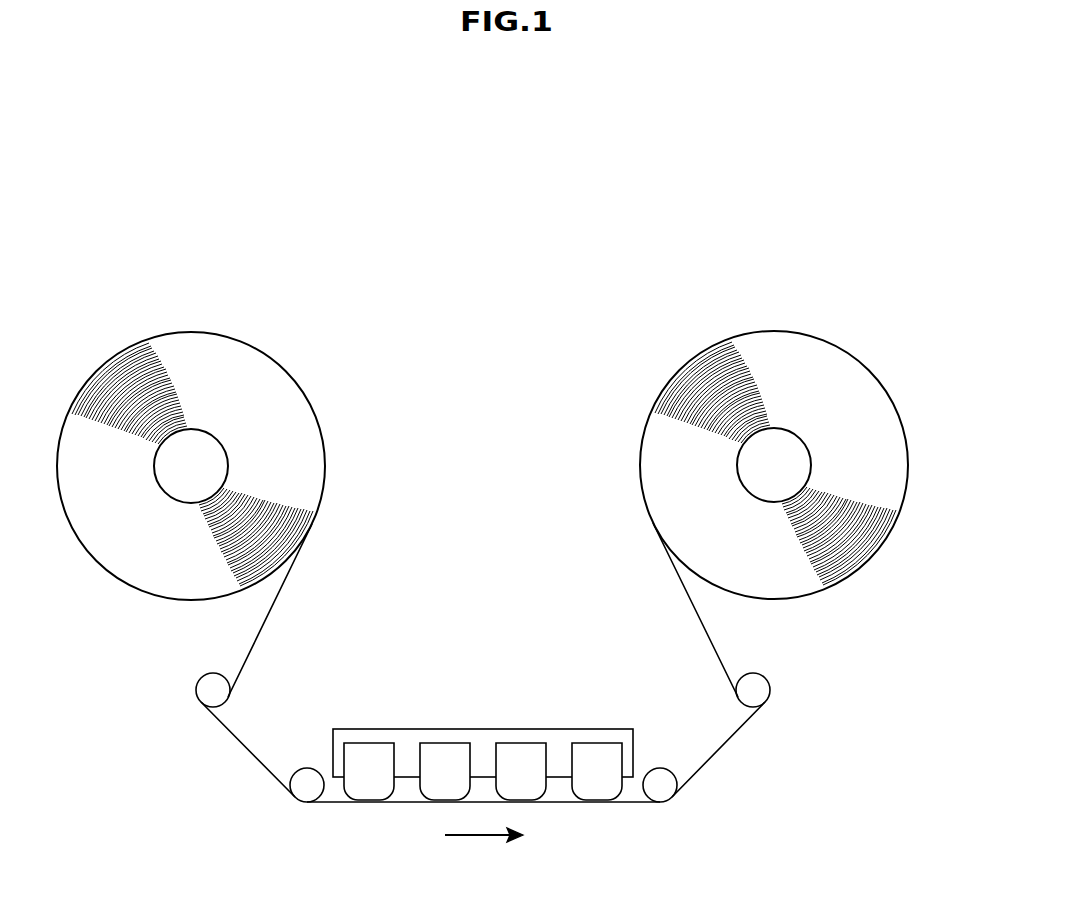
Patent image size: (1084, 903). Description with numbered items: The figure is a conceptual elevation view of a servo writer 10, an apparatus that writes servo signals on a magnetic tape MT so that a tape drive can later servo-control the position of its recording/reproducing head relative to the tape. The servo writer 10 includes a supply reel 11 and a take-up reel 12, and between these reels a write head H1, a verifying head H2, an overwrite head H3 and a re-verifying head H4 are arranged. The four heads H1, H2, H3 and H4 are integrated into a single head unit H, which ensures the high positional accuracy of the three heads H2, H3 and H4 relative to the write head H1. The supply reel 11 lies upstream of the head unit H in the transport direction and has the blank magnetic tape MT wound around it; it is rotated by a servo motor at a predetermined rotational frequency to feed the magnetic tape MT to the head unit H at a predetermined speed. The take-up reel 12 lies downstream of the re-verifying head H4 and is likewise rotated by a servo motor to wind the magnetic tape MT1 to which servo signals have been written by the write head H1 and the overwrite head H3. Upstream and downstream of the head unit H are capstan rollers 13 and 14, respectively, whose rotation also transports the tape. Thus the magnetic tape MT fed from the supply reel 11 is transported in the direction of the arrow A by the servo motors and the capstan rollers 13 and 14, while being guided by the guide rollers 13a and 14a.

The servo writer 10 is at (536, 327).
The supply reel 11 is at (190, 465).
The take-up reel 12 is at (773, 465).
The capstan roller 13 is at (307, 787).
The guide roller 13a is at (204, 690).
The capstan roller 14 is at (660, 787).
The guide roller 14a is at (758, 693).
The head unit H is at (560, 728).
The write head H1 is at (367, 747).
The verifying head H2 is at (443, 747).
The overwrite head H3 is at (513, 747).
The re-verifying head H4 is at (601, 748).
The magnetic tape MT is at (252, 613).
The magnetic tape MT1 is at (733, 630).
The arrow A is at (481, 838).